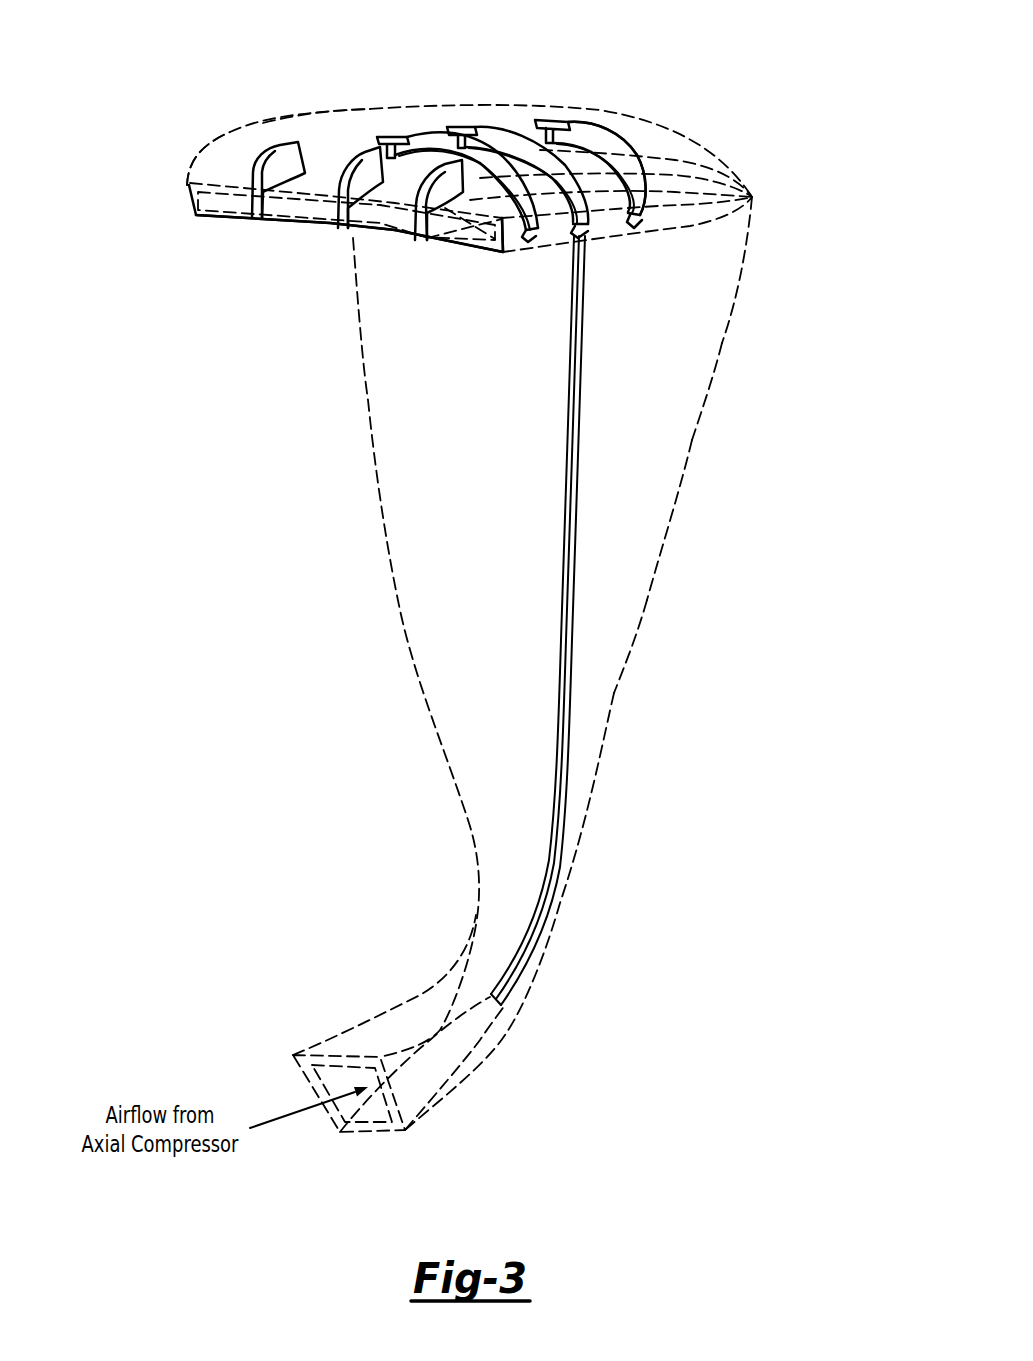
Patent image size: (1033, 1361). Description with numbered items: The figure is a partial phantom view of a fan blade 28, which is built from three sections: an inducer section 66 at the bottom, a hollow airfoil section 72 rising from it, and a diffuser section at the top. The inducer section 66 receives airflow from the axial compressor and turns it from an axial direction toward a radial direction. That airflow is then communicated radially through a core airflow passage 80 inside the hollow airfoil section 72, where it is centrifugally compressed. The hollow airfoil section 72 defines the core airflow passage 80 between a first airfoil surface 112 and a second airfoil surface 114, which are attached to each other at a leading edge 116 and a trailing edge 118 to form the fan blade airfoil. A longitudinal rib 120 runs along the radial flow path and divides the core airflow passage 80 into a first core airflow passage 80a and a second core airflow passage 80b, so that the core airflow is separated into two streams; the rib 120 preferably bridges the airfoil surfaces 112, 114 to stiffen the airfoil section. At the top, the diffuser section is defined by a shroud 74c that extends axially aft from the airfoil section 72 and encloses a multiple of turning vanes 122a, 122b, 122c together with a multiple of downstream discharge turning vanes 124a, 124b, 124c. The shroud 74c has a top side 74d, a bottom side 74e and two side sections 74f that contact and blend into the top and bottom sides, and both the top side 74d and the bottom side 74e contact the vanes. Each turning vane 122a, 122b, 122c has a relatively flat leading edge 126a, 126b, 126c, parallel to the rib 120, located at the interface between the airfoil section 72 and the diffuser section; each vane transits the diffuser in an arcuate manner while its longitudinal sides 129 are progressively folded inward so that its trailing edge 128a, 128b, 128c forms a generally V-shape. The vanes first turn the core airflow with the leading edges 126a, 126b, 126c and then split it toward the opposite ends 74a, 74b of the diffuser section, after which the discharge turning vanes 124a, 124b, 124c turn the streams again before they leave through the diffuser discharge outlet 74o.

The fan blade 28 is at (740, 432).
The inducer section 66 is at (437, 1132).
The hollow airfoil section 72 is at (668, 610).
The end of the diffuser section 74a is at (507, 253).
The end of the diffuser section 74b is at (188, 186).
The shroud 74c is at (213, 162).
The top side 74d is at (305, 132).
The bottom side 74e is at (275, 225).
The side sections 74f is at (240, 130).
The diffuser discharge outlet 74o is at (182, 219).
The core airflow passage 80 is at (672, 343).
The first core airflow passage 80a is at (458, 511).
The second core airflow passage 80b is at (614, 511).
The first airfoil surface 112 is at (640, 455).
The second airfoil surface 114 is at (693, 385).
The leading edge 116 is at (410, 545).
The trailing edge 118 is at (670, 520).
The longitudinal rib 120 is at (553, 880).
The turning vane 122a is at (604, 118).
The turning vane 122b is at (419, 120).
The turning vane 122c is at (489, 113).
The discharge turning vane 124a is at (438, 185).
The discharge turning vane 124b is at (288, 152).
The discharge turning vane 124c is at (348, 162).
The leading edge of turning vane 126a is at (632, 226).
The leading edge of turning vane 126b is at (523, 234).
The leading edge of turning vane 126c is at (586, 228).
The trailing edge of turning vane 128a is at (549, 117).
The trailing edge of turning vane 128b is at (383, 130).
The trailing edge of turning vane 128c is at (457, 123).
The longitudinal sides 129 is at (623, 137).